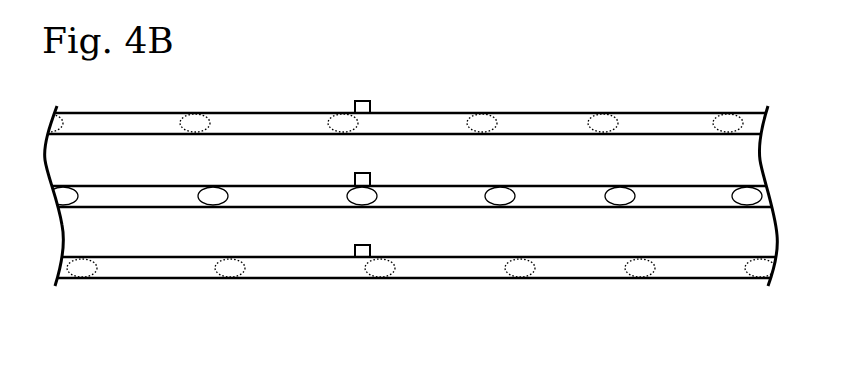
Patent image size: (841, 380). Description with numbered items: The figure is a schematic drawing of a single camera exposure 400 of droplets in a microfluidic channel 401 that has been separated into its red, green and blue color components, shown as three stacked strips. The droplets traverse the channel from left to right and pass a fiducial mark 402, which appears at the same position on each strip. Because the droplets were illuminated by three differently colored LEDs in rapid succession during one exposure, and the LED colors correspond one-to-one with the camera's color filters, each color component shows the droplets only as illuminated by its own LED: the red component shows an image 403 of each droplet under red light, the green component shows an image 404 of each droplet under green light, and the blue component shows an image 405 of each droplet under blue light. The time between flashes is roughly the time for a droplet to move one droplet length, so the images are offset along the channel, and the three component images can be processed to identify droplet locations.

The electrode assembly 400 is at (634, 66).
The substrate strip / layer 401 is at (136, 113).
The connector tab 402 is at (362, 100).
The red component droplet image 403 is at (588, 122).
The green component droplet image 404 is at (606, 194).
The blue component droplet image 405 is at (625, 266).